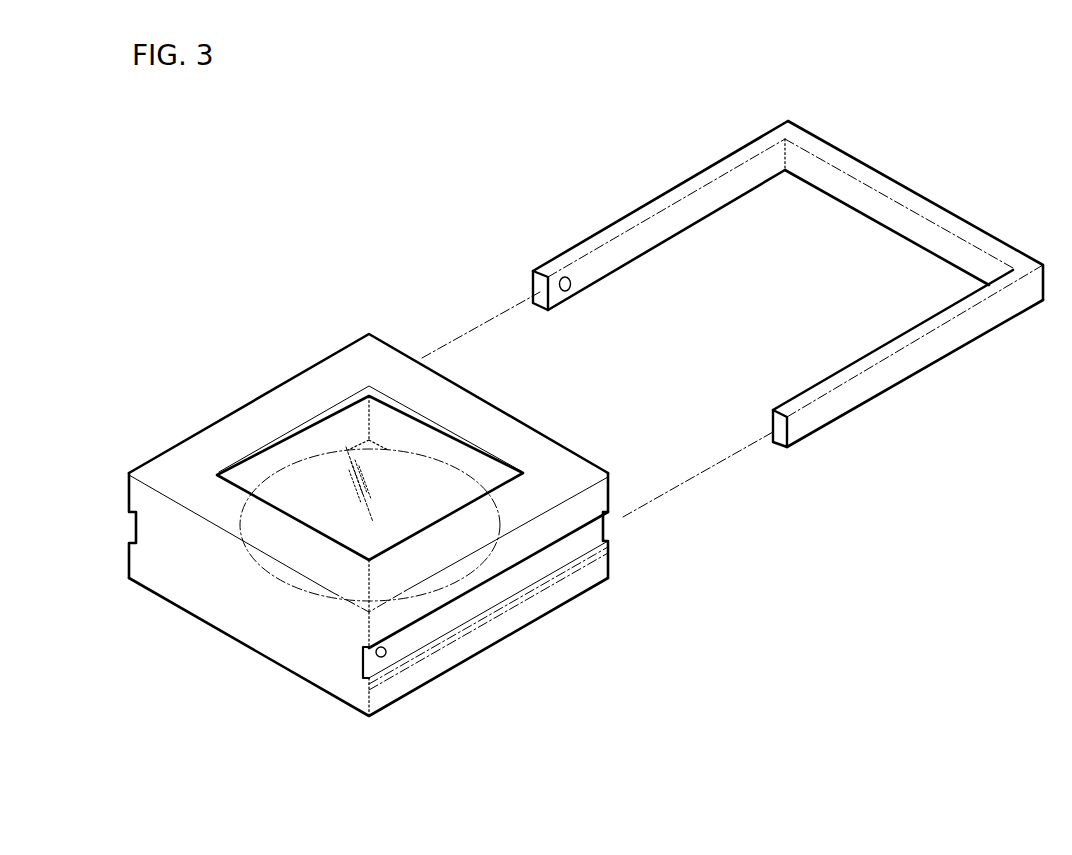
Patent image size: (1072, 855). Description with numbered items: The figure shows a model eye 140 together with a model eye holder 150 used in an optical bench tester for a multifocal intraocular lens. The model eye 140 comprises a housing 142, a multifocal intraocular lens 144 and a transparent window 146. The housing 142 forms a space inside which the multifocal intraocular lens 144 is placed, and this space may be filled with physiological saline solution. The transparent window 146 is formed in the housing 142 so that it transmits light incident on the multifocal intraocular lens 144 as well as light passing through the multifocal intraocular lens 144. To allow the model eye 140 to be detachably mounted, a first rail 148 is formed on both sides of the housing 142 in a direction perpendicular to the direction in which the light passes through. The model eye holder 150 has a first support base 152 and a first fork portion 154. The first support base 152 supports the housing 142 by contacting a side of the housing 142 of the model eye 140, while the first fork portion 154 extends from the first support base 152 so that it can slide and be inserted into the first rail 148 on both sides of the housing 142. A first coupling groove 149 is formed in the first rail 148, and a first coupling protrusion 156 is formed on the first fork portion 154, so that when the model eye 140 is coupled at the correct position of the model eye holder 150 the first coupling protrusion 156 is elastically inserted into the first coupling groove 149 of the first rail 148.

The model eye 140 is at (371, 528).
The housing 142 is at (182, 460).
The multifocal intraocular lens 144 is at (310, 507).
The transparent window 146 is at (345, 422).
The first rail 148 is at (532, 568).
The first coupling groove 149 is at (385, 658).
The model eye holder 150 is at (788, 243).
The first support base 152 is at (908, 202).
The first fork portion 154 is at (690, 180).
The first coupling protrusion 156 is at (570, 291).